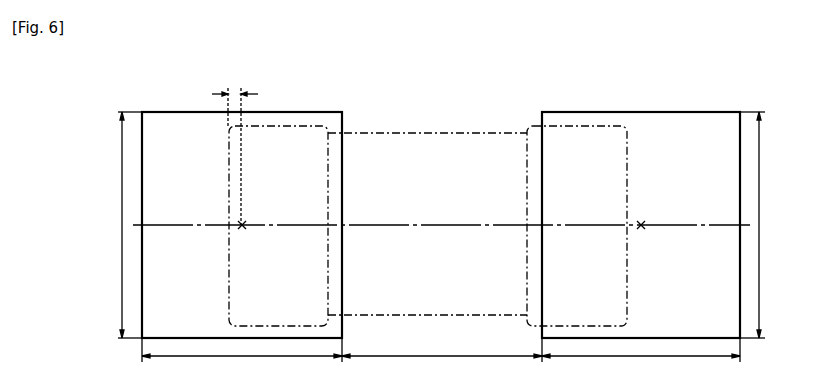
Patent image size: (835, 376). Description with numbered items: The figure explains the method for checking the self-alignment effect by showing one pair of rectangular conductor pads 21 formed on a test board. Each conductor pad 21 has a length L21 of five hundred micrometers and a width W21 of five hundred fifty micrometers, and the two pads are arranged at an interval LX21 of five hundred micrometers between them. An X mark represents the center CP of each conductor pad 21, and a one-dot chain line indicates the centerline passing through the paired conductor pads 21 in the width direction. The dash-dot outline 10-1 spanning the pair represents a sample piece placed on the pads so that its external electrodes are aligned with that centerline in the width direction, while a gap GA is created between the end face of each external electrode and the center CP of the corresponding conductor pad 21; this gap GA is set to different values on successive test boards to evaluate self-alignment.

The conductor pad 21 is at (193, 118).
The display area / panel section 10-1 is at (418, 125).
The center of conductor pad CP is at (449, 158).
The gap GA is at (242, 104).
The width of conductor pad W21 is at (440, 225).
The length of conductor pad L21 is at (441, 356).
The pad spacing length LX21 is at (442, 364).